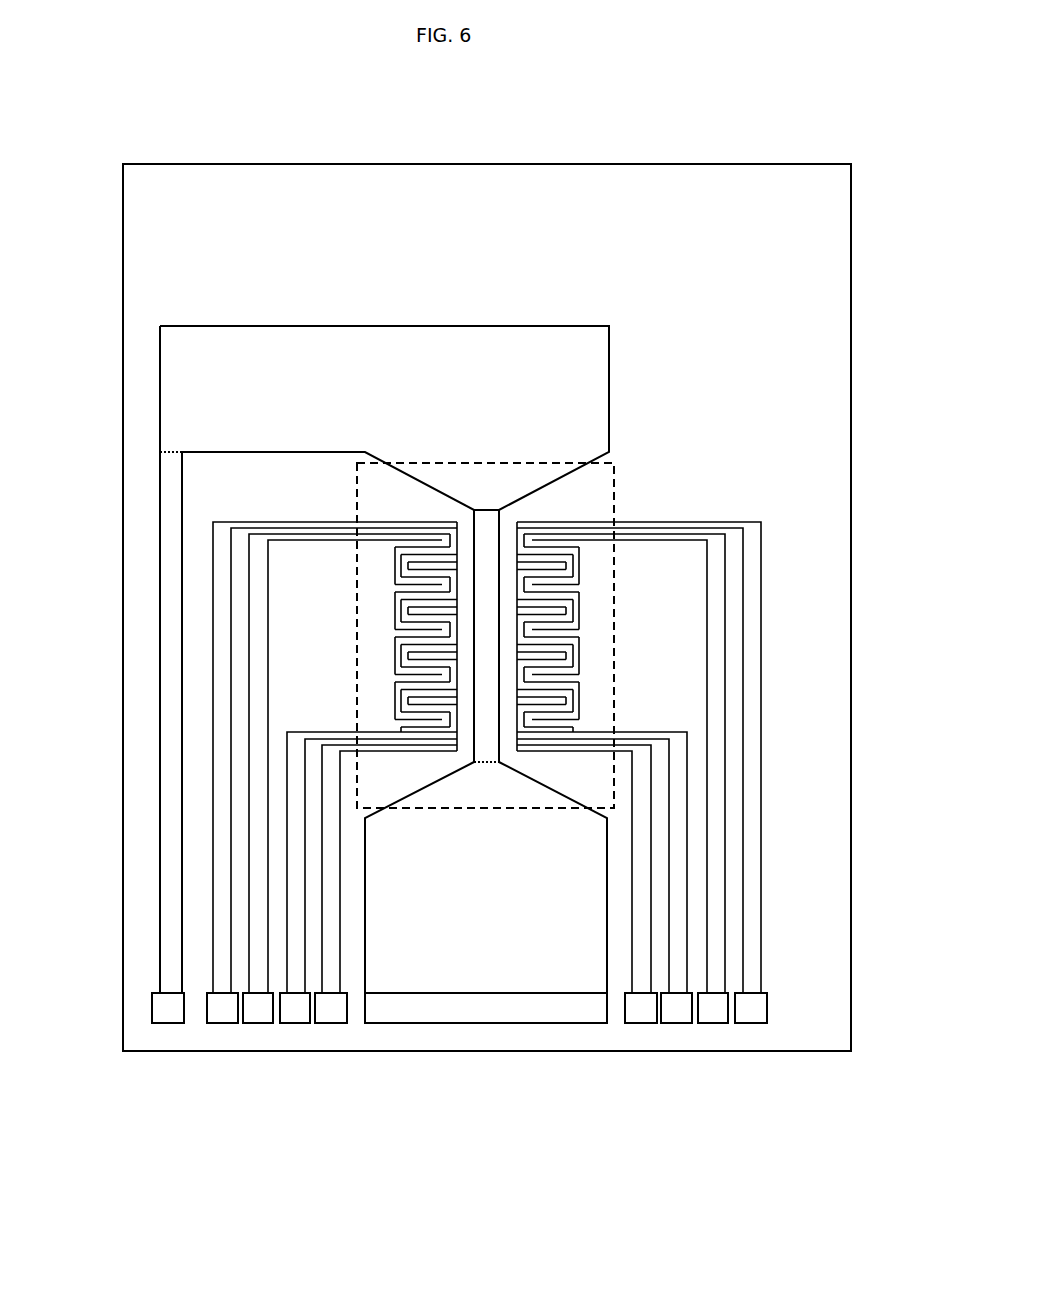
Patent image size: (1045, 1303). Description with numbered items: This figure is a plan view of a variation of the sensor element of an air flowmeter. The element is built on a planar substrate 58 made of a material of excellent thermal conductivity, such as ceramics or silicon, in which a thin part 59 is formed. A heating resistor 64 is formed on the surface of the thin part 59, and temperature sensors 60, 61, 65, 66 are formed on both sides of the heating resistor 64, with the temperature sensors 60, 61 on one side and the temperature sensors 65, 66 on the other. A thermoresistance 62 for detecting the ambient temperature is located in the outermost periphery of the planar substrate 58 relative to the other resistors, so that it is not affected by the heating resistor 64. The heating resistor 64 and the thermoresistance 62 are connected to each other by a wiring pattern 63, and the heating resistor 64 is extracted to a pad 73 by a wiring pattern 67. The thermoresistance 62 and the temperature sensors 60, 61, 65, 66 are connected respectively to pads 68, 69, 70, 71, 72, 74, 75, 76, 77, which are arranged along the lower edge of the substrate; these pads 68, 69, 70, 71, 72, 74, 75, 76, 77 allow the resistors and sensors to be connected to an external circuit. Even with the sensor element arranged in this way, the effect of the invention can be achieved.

The planar substrate 58 is at (123, 222).
The thin part 59 is at (354, 490).
The temperature sensor 60 is at (395, 640).
The temperature sensor 61 is at (395, 702).
The thermoresistance 62 is at (172, 830).
The wiring pattern 63 is at (488, 392).
The heating resistor 64 is at (487, 583).
The temperature sensor 65 is at (575, 643).
The temperature sensor 66 is at (575, 703).
The wiring pattern 67 is at (505, 888).
The pad 68 is at (167, 1010).
The pad 69 is at (222, 1010).
The pad 70 is at (259, 1010).
The pad 71 is at (296, 1010).
The pad 72 is at (332, 1010).
The pad 73 is at (425, 1012).
The pad 74 is at (642, 1010).
The pad 75 is at (678, 1010).
The pad 76 is at (715, 1010).
The pad 77 is at (752, 1010).